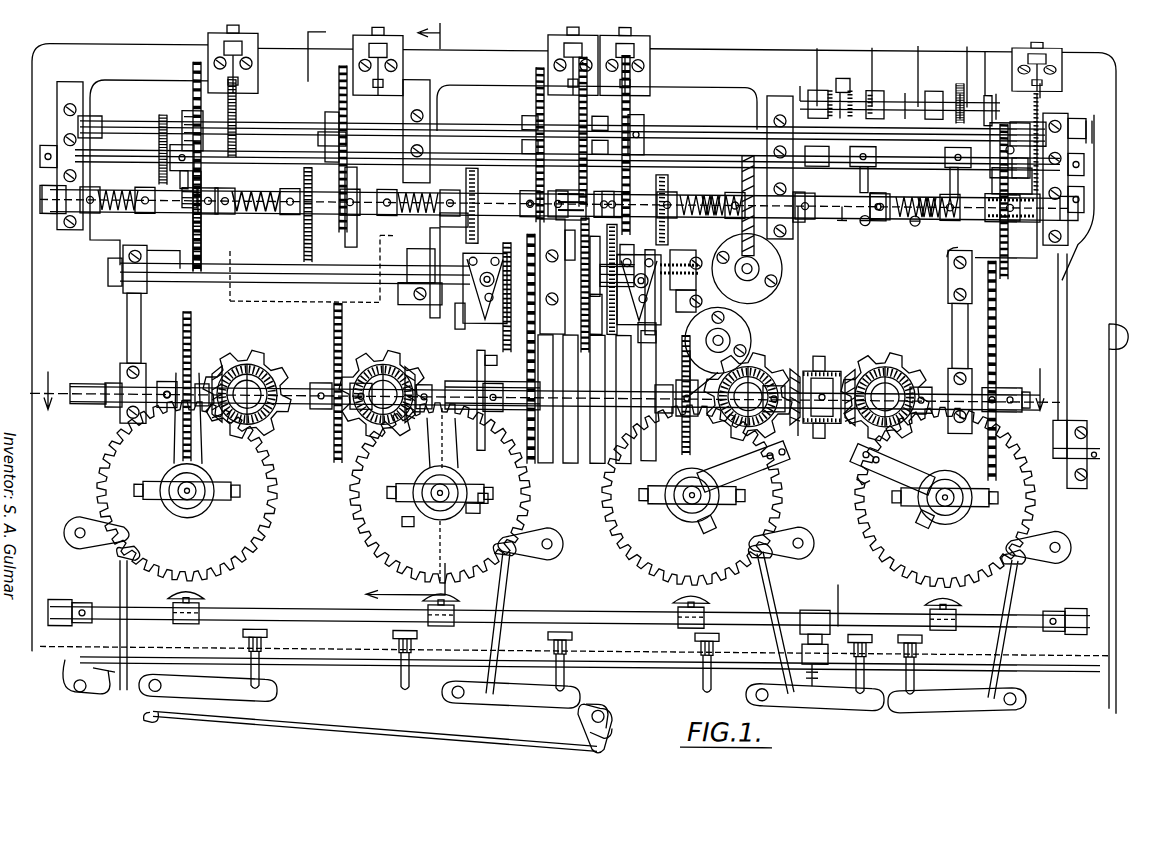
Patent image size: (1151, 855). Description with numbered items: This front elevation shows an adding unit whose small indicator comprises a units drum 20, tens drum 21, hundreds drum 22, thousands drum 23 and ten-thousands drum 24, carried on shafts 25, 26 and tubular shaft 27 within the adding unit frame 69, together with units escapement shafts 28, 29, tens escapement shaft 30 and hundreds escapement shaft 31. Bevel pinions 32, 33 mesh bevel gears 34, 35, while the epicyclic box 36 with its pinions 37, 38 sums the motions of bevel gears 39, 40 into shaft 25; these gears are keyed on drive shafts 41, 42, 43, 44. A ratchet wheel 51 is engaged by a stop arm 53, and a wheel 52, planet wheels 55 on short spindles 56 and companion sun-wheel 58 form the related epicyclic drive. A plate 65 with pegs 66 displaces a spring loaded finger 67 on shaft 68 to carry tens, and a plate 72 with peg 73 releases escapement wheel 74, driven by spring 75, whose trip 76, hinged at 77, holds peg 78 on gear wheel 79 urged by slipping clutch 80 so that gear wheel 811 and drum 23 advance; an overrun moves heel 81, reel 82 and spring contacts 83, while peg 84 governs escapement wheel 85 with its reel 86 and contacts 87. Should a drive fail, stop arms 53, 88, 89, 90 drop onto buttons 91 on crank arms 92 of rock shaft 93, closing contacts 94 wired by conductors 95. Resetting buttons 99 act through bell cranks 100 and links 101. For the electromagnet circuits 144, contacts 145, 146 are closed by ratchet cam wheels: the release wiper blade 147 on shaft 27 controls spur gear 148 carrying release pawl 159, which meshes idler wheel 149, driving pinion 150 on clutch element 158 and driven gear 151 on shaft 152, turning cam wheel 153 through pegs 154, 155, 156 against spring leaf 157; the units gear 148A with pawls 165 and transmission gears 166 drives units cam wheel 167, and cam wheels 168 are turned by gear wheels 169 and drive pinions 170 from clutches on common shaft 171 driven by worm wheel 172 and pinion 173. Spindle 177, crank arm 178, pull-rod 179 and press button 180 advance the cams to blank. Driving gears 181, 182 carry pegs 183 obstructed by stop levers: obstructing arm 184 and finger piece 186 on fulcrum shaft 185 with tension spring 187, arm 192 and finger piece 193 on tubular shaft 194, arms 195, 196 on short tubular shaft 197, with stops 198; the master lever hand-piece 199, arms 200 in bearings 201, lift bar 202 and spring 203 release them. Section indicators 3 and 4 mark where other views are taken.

The units drum 20 is at (648, 455).
The tens drum 21 is at (623, 452).
The hundreds drum 22 is at (597, 452).
The thousands drum 23 is at (570, 452).
The ten-thousands drum 24 is at (546, 450).
The units drum shaft 25 is at (724, 426).
The tens drum shaft 26 is at (294, 434).
The tubular shaft 27 is at (458, 389).
The units escapement shaft 28 is at (962, 500).
The units escapement shaft 29 is at (716, 502).
The tens escapement shaft 30 is at (191, 514).
The hundreds escapement shaft 31 is at (442, 514).
The bevel pinion 32 is at (221, 431).
The bevel pinion 33 is at (406, 431).
The bevel gear 34 is at (268, 348).
The bevel gear 35 is at (400, 364).
The epicyclic box 36 is at (827, 352).
The pinion 37 is at (778, 352).
The pinion 38 is at (856, 352).
The bevel gear 39 is at (748, 396).
The bevel gear 40 is at (904, 360).
The drive shaft 41 is at (224, 352).
The drive shaft 42 is at (378, 346).
The drive shaft 43 is at (760, 397).
The drive shaft 44 is at (910, 432).
The ratchet wheel 51 is at (388, 450).
The wheel 52 is at (352, 523).
The stop arm 53 is at (462, 460).
The planet wheels 55 is at (416, 520).
The short spindles 56 is at (410, 516).
The companion sun-wheel 58 is at (440, 538).
The plate 65 is at (660, 376).
The pegs 66 is at (676, 348).
The spring loaded finger 67 is at (706, 372).
The shaft 68 is at (738, 310).
The adding unit frame 69 is at (739, 44).
The plate 72 is at (456, 436).
The peg 73 is at (487, 360).
The escapement wheel 74 is at (628, 245).
The spring 75 is at (558, 304).
The trip 76 is at (600, 266).
The hinge 77 is at (652, 323).
The peg 78 is at (603, 277).
The gear wheel 79 is at (585, 315).
The slipping clutch 80 is at (466, 182).
The heel 81 is at (656, 246).
The reel 82 is at (676, 244).
The spring contacts 83 is at (687, 275).
The peg 84 is at (556, 276).
The escapement wheel 85 is at (500, 319).
The reel 86 is at (445, 253).
The contacts 87 is at (412, 290).
The stop arm 88 is at (172, 446).
The stop arm 89 is at (708, 488).
The stop arm 90 is at (900, 500).
The buttons 91 is at (202, 596).
The crank arms 92 is at (200, 624).
The rock shaft 93 is at (324, 608).
The contacts 94 is at (777, 631).
The conductors 95 is at (832, 596).
The buttons 99 is at (268, 634).
The bell cranks 100 is at (1062, 522).
The links 101 is at (503, 594).
The electromagnet circuits 144 is at (308, 30).
The contact 145 is at (214, 50).
The contact 146 is at (254, 87).
The release wiper blade 147 is at (344, 364).
The spur gear 148 is at (336, 446).
The units gear wheel 148A is at (992, 341).
The idler wheel 149 is at (328, 322).
The driving pinion 150 is at (282, 232).
The driven gear wheel 151 is at (324, 74).
The shaft 152 is at (700, 116).
The ratchet shaped cam wheel 153 is at (430, 110).
The peg 154 is at (327, 126).
The peg 155 is at (346, 118).
The extra peg 156 is at (376, 214).
The spring leaf 157 is at (414, 128).
The driven element 158 is at (298, 234).
The release ratchet pawl 159 is at (324, 380).
The pawls 165 is at (982, 372).
The units transmission gears 166 is at (1000, 306).
The units ratchet cam wheel 167 is at (1068, 93).
The ratchet cam wheels 168 is at (640, 108).
The gear wheels 169 is at (538, 100).
The drive pinions 170 is at (535, 184).
The common shaft 171 is at (851, 208).
The worm wheel 172 is at (745, 176).
The pinion 173 is at (784, 262).
The common spindle 177 is at (148, 160).
The crank arm 178 is at (1094, 126).
The pull-rod 179 is at (1066, 326).
The press button 180 is at (1108, 334).
The units ratchet cam driving gear 181 is at (995, 62).
The tens ratchet cam driving gear 182 is at (194, 72).
The peg 183 is at (190, 222).
The obstructing arm 184 is at (176, 148).
The fulcrum shaft 185 is at (899, 155).
The finger piece 186 is at (918, 63).
The tension spring 187 is at (911, 216).
The obstructing arm 192 is at (328, 151).
The finger piece 193 is at (872, 64).
The tubular shaft 194 is at (788, 158).
The arm 195 is at (967, 63).
The arm 196 is at (998, 193).
The short tubular shaft 197 is at (976, 148).
The stops 198 is at (956, 162).
The hand-piece 199 is at (834, 84).
The arms 200 is at (839, 74).
The bearings 201 is at (776, 90).
The lift bar 202 is at (962, 90).
The spring 203 is at (798, 76).
The section line 3 is at (405, 310).
The section line 4 is at (544, 372).
The gear wheel 811 is at (572, 510).